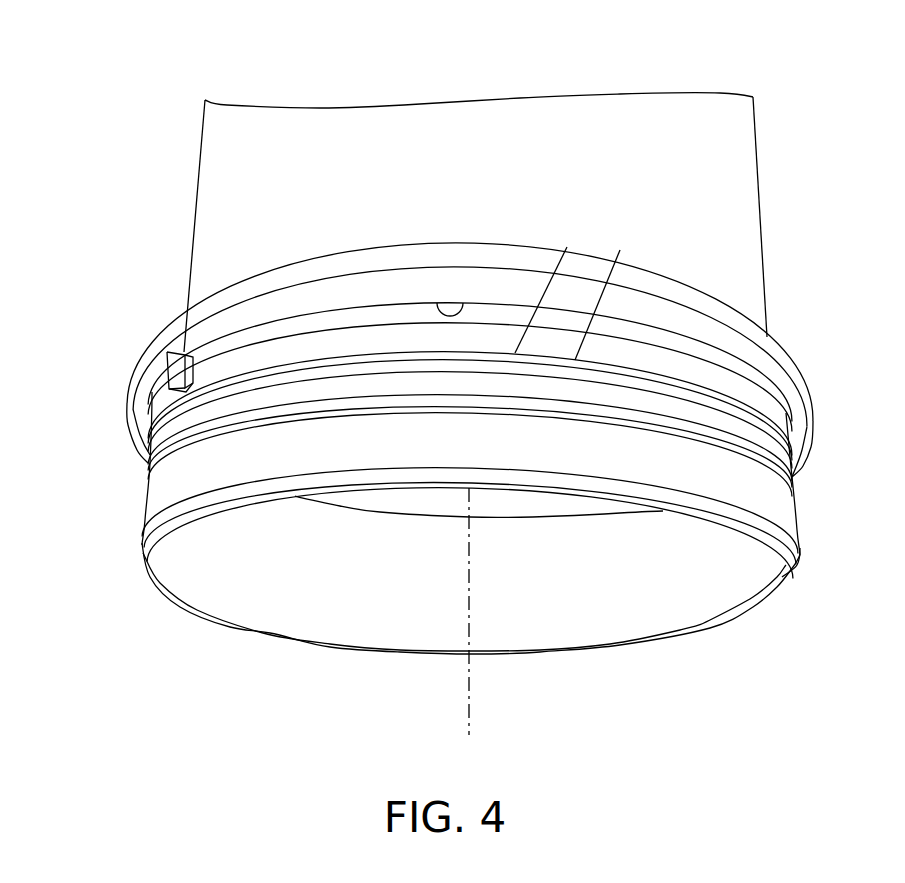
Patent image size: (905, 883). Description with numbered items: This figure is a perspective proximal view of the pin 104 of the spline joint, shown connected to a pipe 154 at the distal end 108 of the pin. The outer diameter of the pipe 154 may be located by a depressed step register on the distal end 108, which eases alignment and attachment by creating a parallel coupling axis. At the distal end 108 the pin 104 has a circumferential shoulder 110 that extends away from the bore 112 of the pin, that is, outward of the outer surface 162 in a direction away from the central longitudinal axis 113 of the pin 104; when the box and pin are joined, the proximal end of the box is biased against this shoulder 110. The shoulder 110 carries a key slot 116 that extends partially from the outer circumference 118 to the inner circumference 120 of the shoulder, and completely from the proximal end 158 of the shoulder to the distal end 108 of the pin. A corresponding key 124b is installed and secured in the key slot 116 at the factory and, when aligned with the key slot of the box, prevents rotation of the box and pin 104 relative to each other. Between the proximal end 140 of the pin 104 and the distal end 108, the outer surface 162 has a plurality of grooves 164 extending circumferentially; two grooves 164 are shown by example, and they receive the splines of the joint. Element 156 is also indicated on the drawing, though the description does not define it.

The pipe 154 is at (681, 130).
The shoulder 110 is at (298, 275).
The outer circumference of the shoulder 118 is at (703, 330).
The key slot 116 is at (174, 330).
The distal end of the pin 108 is at (765, 300).
The inner circumference of the shoulder 120 is at (657, 327).
The pin 104 is at (208, 456).
The bore 112 is at (718, 613).
The bottom inner edge 156 is at (270, 613).
The outer surface 162 is at (633, 477).
The proximal end of the pin 140 is at (783, 575).
The key 124b is at (173, 372).
The proximal end of the shoulder 158 is at (459, 302).
The grooves 164 is at (567, 247).
The central longitudinal axis 113 is at (470, 703).